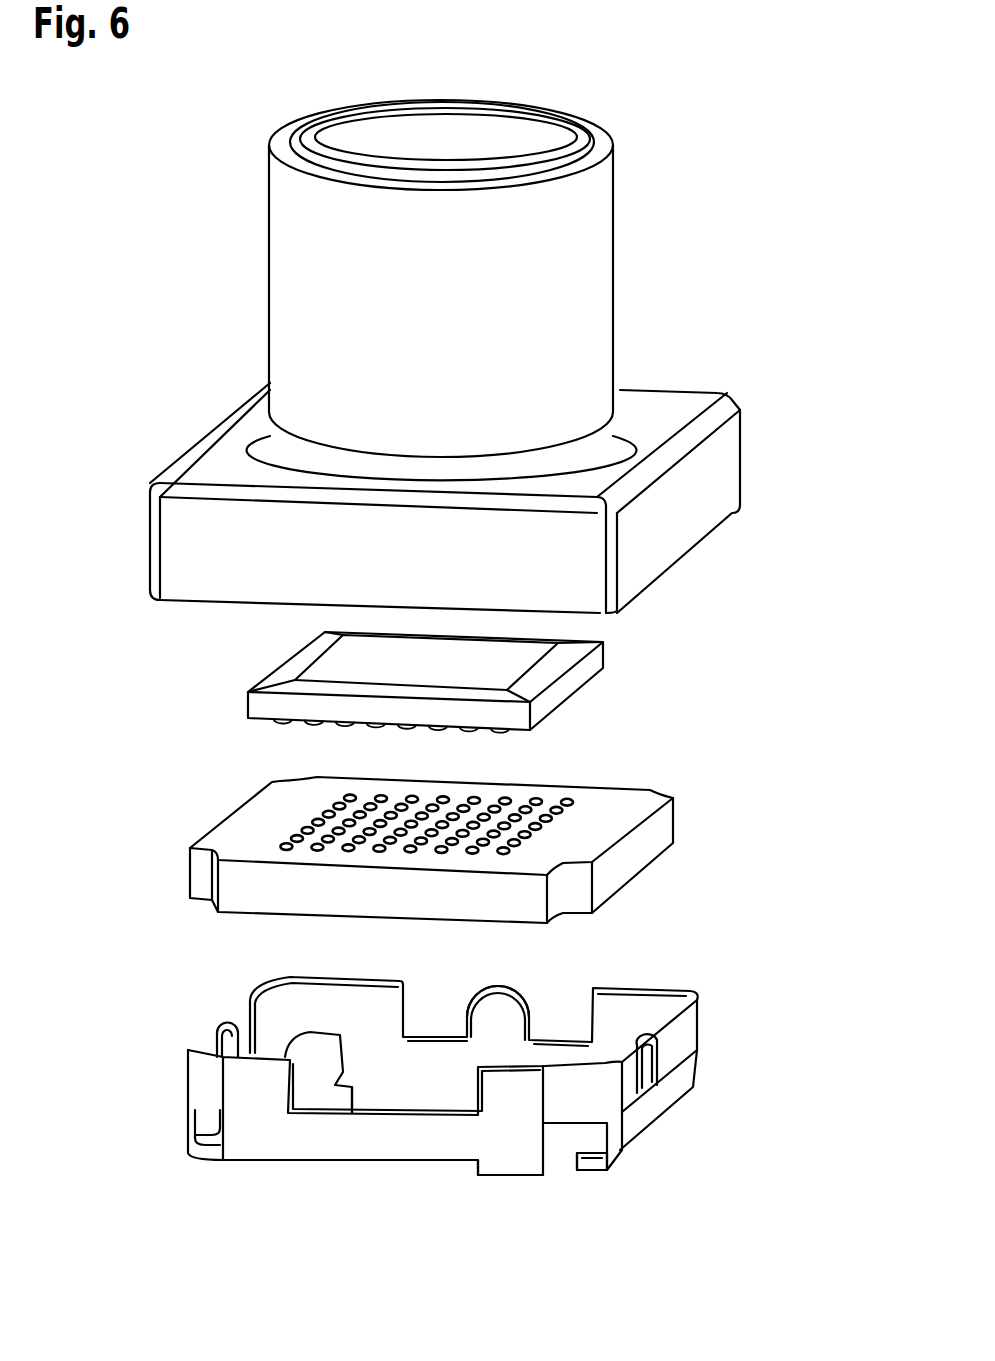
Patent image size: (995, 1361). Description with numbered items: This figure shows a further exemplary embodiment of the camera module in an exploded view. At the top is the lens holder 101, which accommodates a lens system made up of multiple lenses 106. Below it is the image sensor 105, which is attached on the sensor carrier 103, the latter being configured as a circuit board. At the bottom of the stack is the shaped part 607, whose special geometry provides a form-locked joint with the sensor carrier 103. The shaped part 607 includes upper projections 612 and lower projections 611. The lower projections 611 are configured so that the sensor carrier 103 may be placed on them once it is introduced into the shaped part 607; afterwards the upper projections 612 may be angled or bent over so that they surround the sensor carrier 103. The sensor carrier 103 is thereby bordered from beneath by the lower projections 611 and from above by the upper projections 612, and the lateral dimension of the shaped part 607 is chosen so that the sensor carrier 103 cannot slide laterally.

The lens holder 101 is at (297, 270).
The lenses 106 is at (508, 135).
The image sensor 105 is at (508, 667).
The sensor carrier 103 is at (612, 803).
The shaped part 607 is at (640, 1110).
The lower projections 611 is at (550, 1167).
The upper projections 612 is at (225, 1037).